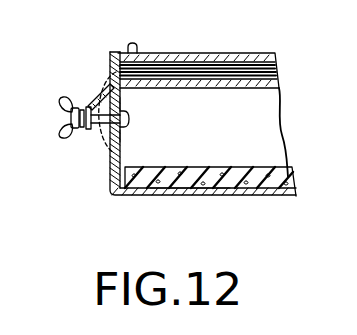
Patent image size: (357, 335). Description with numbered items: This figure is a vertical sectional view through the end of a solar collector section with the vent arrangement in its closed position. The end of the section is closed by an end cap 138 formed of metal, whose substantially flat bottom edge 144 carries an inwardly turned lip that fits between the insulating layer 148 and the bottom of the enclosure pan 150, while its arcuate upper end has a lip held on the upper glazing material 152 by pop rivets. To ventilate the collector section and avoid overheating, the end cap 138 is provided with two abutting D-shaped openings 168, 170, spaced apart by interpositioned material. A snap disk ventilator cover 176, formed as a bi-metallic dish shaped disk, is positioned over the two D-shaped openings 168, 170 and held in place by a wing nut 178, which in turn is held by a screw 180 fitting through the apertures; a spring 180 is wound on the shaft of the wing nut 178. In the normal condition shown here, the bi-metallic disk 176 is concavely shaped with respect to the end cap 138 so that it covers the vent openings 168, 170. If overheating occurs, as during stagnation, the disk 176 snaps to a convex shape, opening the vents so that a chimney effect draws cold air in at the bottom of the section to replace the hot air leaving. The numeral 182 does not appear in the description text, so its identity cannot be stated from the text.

The end cap 138 is at (109, 52).
The flat bottom edge 144 is at (123, 193).
The insulating layer 148 is at (226, 190).
The enclosure pan 150 is at (200, 198).
The upper glazing material 152 is at (203, 55).
The D-shaped opening 168 is at (121, 104).
The D-shaped opening 170 is at (122, 135).
The snap disk ventilator cover 176 is at (100, 93).
The wing nut 178 is at (64, 102).
The screw 180 is at (129, 120).
The washers 182 is at (81, 129).